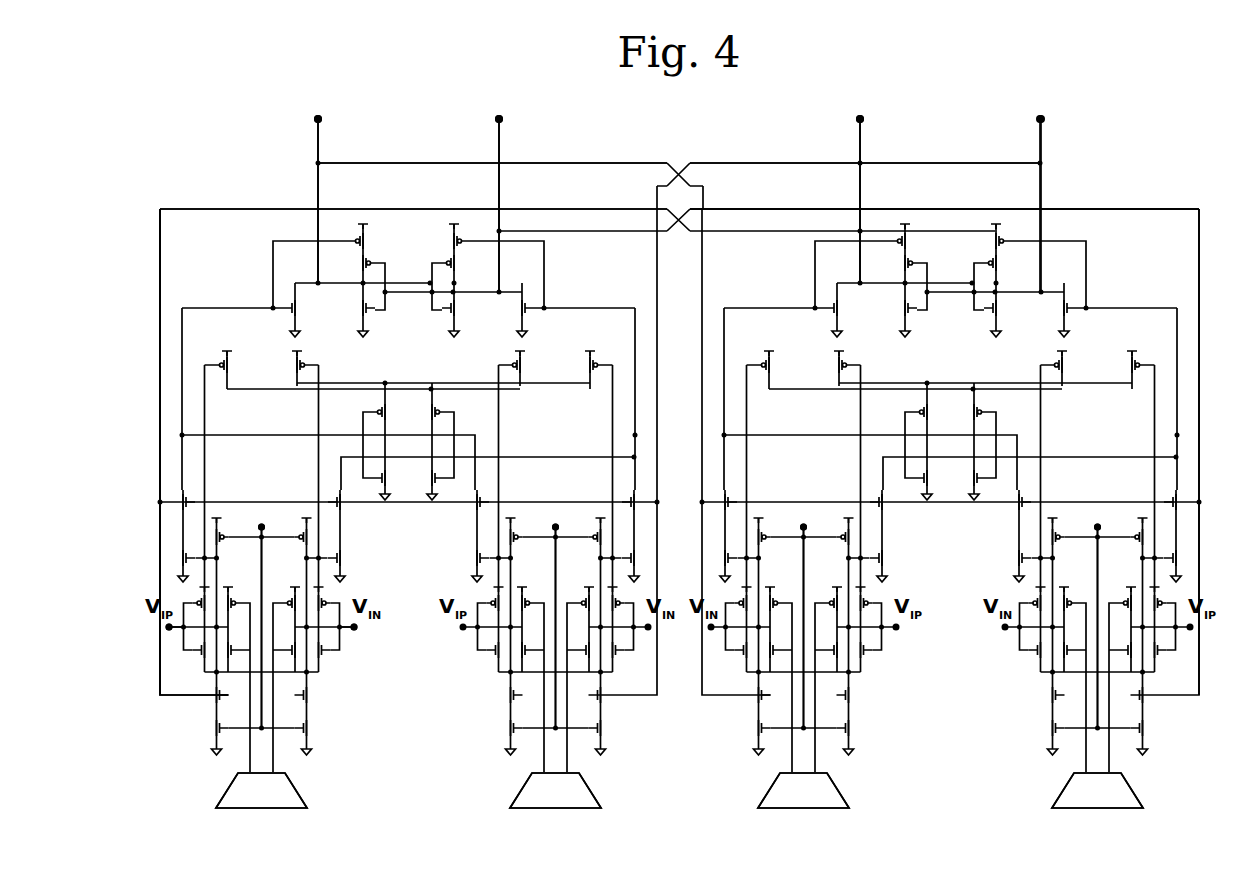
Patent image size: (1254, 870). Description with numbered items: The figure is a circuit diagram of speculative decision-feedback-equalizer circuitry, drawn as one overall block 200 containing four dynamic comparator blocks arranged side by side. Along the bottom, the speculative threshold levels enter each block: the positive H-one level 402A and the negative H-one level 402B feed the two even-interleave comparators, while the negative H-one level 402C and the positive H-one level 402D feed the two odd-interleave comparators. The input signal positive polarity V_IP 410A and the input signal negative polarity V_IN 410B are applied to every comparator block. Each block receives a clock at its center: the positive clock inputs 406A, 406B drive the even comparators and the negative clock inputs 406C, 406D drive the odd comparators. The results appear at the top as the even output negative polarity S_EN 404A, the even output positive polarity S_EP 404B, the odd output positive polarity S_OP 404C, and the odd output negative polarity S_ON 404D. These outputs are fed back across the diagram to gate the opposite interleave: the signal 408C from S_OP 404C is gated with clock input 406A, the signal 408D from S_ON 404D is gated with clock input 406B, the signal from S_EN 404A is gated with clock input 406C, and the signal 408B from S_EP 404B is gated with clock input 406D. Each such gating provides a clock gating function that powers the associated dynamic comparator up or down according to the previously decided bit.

The comparator/latch circuit 200 is at (232, 211).
The +H1 level input for the even interleave 402A is at (306, 808).
The −H1 level input for the even interleave 402B is at (517, 808).
The −H1 level input for the odd interleave 402C is at (770, 808).
The +H1 level input for the odd interleave 402D is at (1062, 808).
The even output negative polarity S_EN 404A is at (331, 124).
The even output positive polarity S_EP 404B is at (507, 123).
The odd output positive polarity S_OP 404C is at (870, 123).
The odd output negative polarity S_ON 404D is at (1048, 123).
The positive clock input 406A is at (248, 503).
The positive clock input 406B is at (553, 505).
The negative clock input 406C is at (805, 512).
The negative clock input 406D is at (1103, 533).
The signal from even output positive polarity S_EP 408B is at (1108, 209).
The signal from odd output positive polarity S_OP 408C is at (160, 287).
The signal from odd output negative polarity S_ON 408D is at (810, 163).
The input signal positive polarity V_IP 410A is at (165, 624).
The input signal negative polarity V_IN 410B is at (357, 630).